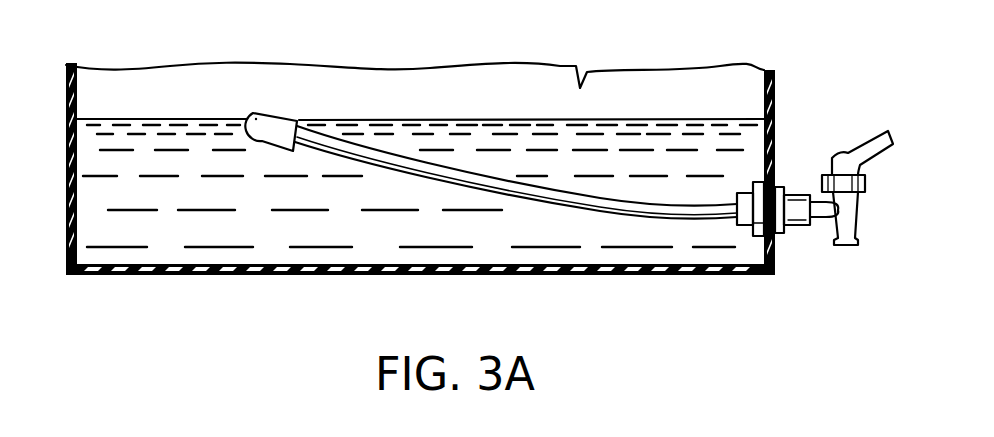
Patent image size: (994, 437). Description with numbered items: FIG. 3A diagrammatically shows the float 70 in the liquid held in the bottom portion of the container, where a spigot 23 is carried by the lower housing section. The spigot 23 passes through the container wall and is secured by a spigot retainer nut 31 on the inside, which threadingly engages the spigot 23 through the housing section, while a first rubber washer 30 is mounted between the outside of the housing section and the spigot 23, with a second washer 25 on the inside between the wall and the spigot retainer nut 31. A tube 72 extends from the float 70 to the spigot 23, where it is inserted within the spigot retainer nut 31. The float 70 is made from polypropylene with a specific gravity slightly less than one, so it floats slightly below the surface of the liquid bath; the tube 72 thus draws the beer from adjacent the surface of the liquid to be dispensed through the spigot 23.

The spigot 23 is at (802, 150).
The flange nut 25 is at (759, 234).
The first rubber washer 30 is at (786, 228).
The spigot retainer nut 31 is at (747, 218).
The float 70 is at (268, 115).
The tube 72 is at (660, 210).